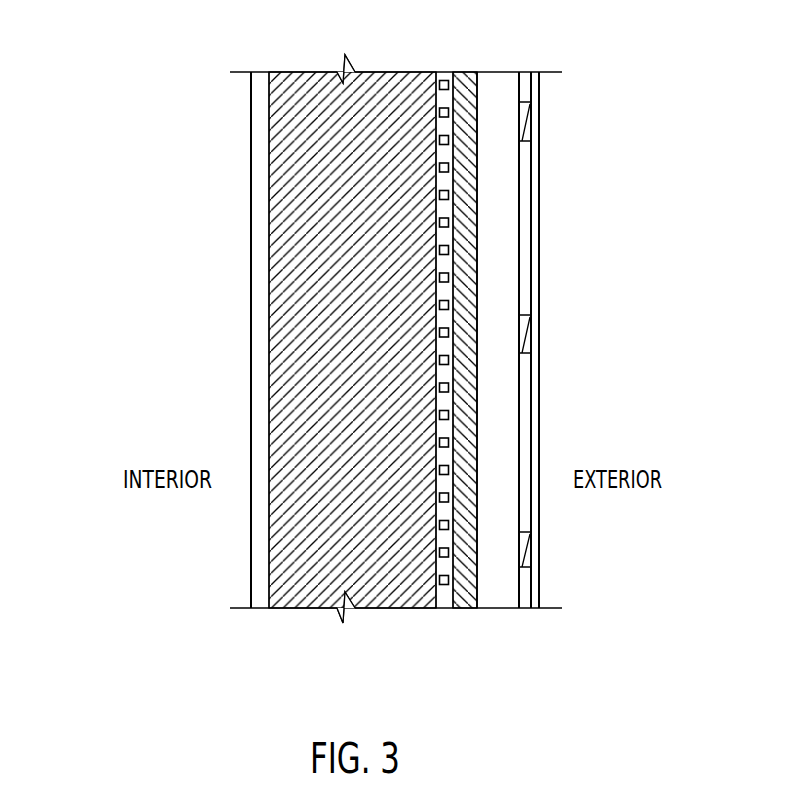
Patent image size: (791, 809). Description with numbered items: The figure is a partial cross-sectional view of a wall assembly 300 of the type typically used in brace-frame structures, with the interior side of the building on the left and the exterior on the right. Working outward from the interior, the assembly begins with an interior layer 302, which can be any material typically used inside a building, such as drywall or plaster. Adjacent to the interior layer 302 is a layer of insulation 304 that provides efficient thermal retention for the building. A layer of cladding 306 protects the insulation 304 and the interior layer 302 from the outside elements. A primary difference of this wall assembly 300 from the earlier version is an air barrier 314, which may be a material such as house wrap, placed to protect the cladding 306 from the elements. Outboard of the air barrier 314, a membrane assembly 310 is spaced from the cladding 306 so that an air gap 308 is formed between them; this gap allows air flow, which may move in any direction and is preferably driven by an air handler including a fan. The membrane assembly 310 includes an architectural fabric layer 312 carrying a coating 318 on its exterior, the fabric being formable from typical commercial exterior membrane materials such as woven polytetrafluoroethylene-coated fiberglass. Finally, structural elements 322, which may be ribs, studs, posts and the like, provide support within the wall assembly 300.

The wall assembly 300 is at (165, 142).
The interior layer 302 is at (250, 385).
The layer of insulation 304 is at (290, 598).
The cladding 306 is at (444, 600).
The air gap 308 is at (502, 593).
The membrane assembly 310 is at (523, 174).
The architectural fabric layer 312 is at (525, 393).
The air barrier 314 is at (467, 80).
The coating 318 is at (540, 218).
The structural elements 322 is at (527, 552).